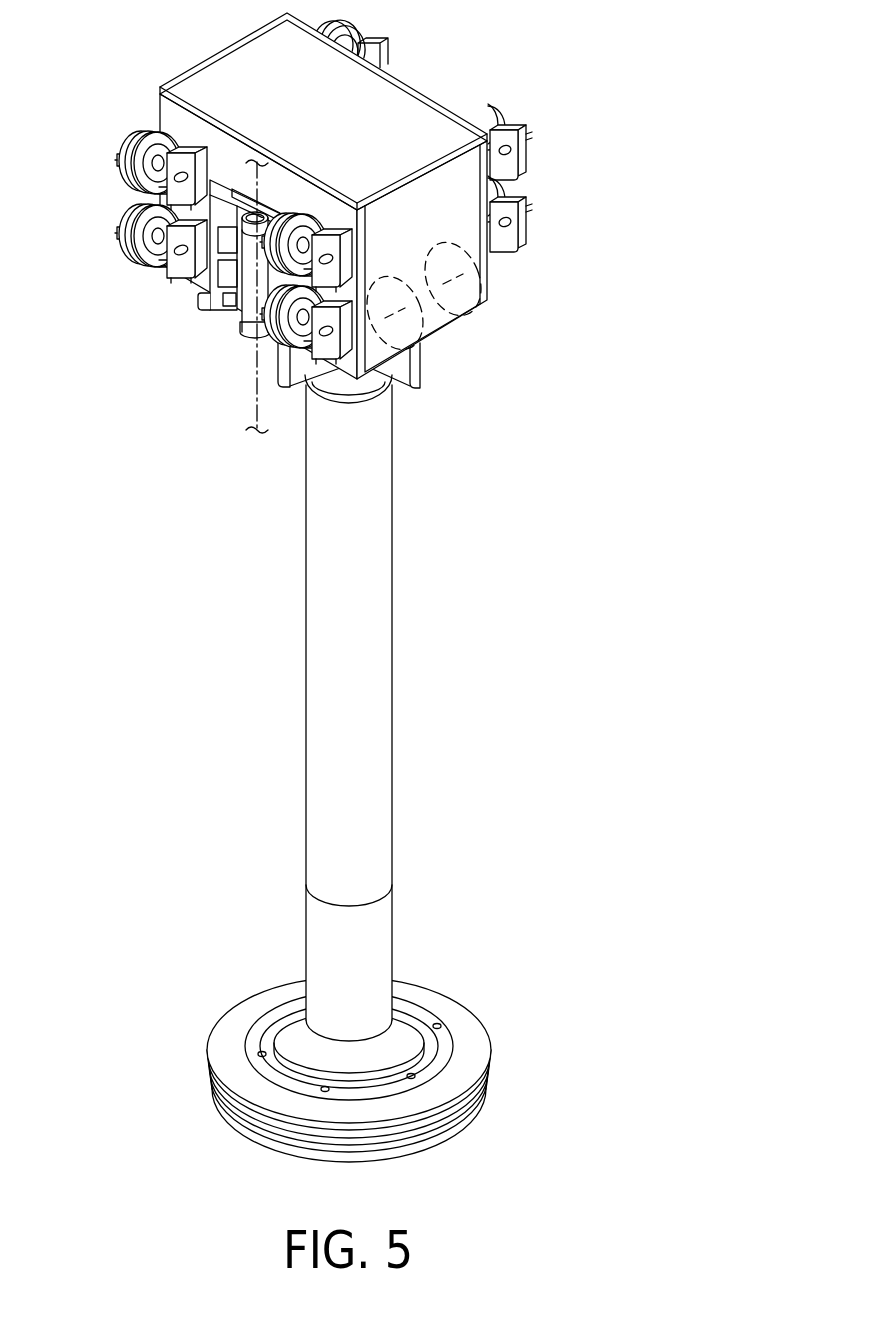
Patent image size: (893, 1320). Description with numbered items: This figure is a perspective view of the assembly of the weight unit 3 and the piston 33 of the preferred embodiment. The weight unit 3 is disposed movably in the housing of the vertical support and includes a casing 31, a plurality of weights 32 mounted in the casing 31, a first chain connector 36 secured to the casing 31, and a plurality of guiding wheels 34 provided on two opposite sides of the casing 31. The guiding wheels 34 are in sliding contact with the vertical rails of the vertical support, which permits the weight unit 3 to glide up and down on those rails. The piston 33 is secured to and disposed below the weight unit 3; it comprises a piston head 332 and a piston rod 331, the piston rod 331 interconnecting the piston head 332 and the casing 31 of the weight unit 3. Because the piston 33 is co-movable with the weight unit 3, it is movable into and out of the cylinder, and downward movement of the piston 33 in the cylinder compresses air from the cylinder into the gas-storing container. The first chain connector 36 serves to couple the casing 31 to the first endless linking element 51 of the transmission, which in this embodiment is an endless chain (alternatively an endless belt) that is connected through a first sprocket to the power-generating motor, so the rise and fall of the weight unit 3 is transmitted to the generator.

The weight unit 3 is at (377, 583).
The casing 31 is at (453, 180).
The weights 32 is at (397, 346).
The piston 33 is at (408, 751).
The piston rod 331 is at (362, 697).
The piston head 332 is at (460, 1048).
The guiding wheels 34 is at (346, 27).
The first chain connector 36 is at (237, 312).
The first endless linking element 51 is at (257, 399).